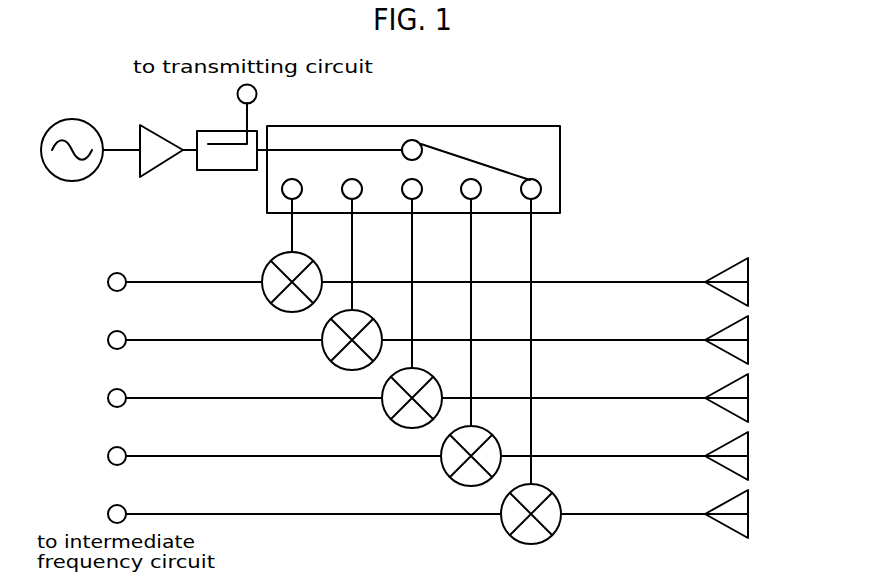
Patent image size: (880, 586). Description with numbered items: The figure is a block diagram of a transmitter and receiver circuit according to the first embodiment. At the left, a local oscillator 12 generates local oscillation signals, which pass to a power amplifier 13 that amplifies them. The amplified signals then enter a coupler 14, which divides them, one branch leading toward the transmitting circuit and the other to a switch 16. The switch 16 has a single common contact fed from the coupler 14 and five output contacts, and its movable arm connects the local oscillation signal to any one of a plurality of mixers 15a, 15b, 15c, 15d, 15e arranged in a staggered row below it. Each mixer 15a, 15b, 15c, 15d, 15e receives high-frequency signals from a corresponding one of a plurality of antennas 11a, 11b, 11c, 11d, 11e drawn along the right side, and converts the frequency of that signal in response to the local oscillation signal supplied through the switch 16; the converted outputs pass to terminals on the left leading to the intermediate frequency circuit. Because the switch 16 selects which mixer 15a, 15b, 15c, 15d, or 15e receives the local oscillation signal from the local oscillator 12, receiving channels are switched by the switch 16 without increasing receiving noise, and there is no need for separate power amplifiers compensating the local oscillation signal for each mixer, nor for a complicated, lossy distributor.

The antenna 11a is at (727, 266).
The antenna 11b is at (727, 325).
The antenna 11c is at (727, 383).
The antenna 11d is at (727, 441).
The antenna 11e is at (727, 498).
The local oscillator 12 is at (96, 124).
The power amplifier 13 is at (162, 130).
The coupler 14 is at (253, 128).
The mixer 15a is at (263, 264).
The mixer 15b is at (323, 325).
The mixer 15c is at (383, 384).
The mixer 15d is at (442, 443).
The mixer 15e is at (502, 504).
The switch 16 is at (513, 124).